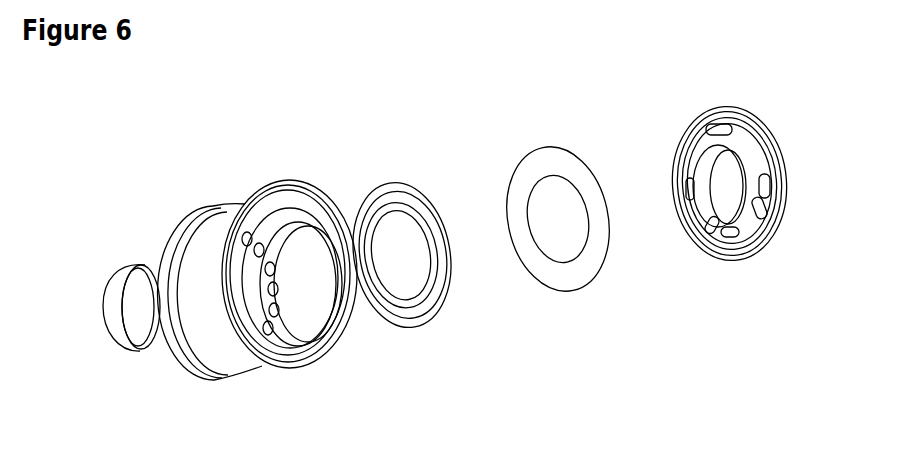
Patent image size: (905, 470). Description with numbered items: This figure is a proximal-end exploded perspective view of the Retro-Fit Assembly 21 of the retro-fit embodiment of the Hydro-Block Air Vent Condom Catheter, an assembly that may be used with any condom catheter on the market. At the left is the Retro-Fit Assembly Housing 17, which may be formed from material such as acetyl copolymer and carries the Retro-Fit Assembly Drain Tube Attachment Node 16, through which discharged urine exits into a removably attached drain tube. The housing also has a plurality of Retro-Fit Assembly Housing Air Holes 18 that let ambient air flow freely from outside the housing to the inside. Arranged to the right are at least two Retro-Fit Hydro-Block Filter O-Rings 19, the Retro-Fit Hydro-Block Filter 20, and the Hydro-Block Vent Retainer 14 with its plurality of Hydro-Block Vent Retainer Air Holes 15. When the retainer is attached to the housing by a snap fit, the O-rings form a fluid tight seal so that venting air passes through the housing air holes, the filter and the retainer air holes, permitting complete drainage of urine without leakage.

The Hydro-Block Vent Retainer 14 is at (688, 232).
The Hydro-Block Vent Retainer Air Holes 15 is at (716, 129).
The Retro-Fit Assembly Drain Tube Attachment Node 16 is at (118, 332).
The Retro-Fit Assembly Housing 17 is at (182, 214).
The Retro-Fit Assembly Housing Air Holes 18 is at (277, 303).
The Retro-Fit Hydro-Block Filter O-Rings 19 is at (417, 217).
The Retro-Fit Hydro-Block Filter 20 is at (543, 271).
The Retro-Fit Assembly 21 is at (815, 308).